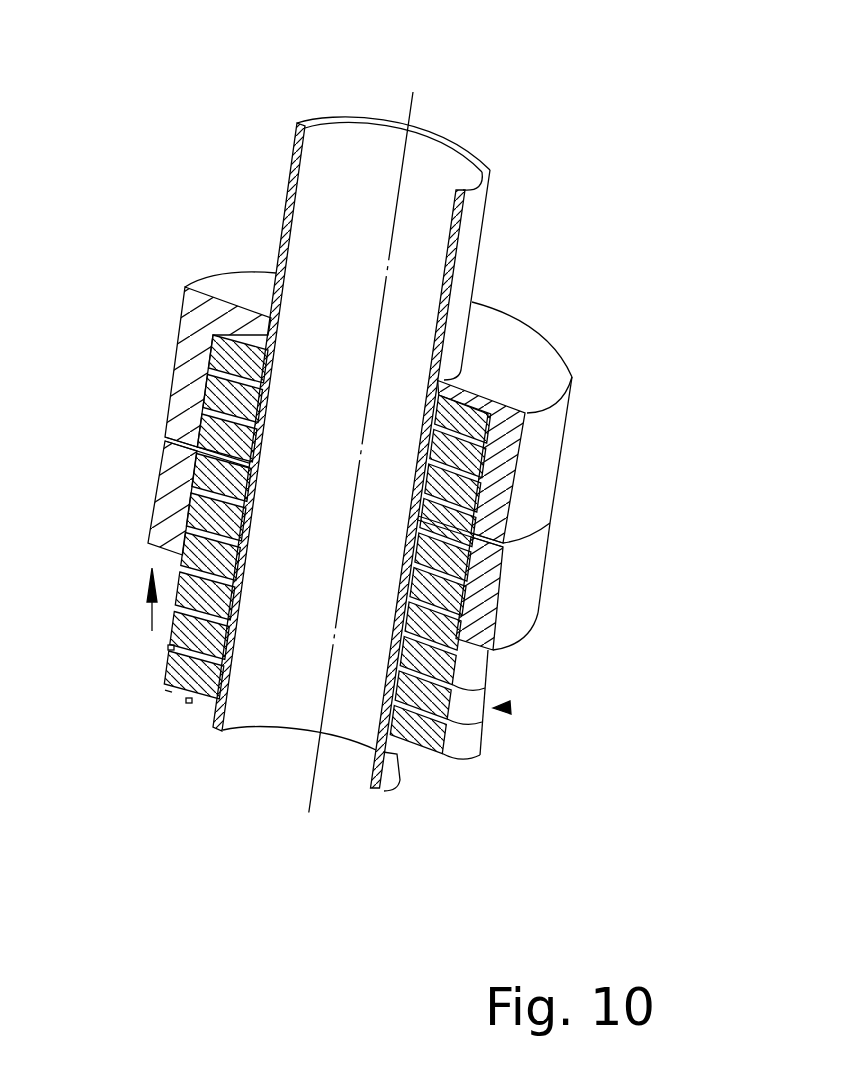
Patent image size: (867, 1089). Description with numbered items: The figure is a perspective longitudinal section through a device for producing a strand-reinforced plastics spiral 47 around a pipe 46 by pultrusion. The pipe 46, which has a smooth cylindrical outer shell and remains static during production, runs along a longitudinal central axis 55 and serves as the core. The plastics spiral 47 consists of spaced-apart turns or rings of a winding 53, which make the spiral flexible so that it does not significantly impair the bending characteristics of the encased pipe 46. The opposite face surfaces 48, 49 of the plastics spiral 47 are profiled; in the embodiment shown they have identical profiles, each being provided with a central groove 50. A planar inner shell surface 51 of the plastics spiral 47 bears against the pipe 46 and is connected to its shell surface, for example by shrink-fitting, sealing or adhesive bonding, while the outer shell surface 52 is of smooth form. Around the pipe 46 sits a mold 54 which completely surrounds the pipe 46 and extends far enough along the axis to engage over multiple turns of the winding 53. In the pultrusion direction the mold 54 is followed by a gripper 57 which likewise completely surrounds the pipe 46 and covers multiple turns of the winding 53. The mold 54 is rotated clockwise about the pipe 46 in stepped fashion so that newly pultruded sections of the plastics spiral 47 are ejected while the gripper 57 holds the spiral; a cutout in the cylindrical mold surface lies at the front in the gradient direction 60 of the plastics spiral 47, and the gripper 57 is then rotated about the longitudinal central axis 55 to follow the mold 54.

The pipe 46 is at (443, 170).
The plastics spiral 47 is at (510, 706).
The face surface 48 is at (168, 673).
The face surface 49 is at (170, 692).
The central groove 50 is at (173, 648).
The inner shell surface 51 is at (390, 795).
The outer shell surface 52 is at (473, 762).
The winding 53 is at (472, 470).
The mold 54 is at (552, 433).
The longitudinal central axis 55 is at (410, 99).
The gripper 57 is at (530, 580).
The gradient direction 60 is at (150, 618).